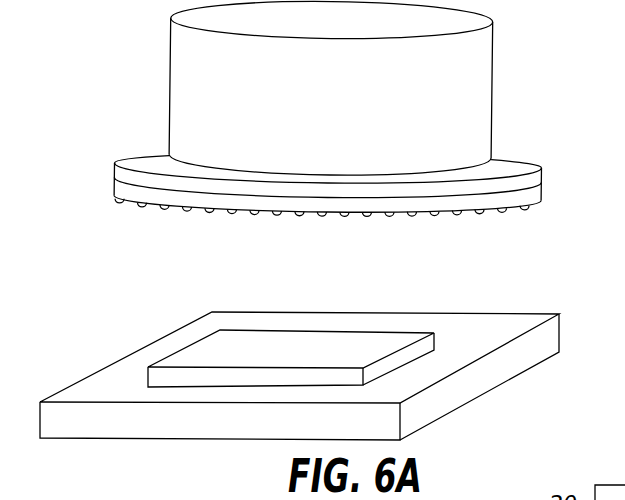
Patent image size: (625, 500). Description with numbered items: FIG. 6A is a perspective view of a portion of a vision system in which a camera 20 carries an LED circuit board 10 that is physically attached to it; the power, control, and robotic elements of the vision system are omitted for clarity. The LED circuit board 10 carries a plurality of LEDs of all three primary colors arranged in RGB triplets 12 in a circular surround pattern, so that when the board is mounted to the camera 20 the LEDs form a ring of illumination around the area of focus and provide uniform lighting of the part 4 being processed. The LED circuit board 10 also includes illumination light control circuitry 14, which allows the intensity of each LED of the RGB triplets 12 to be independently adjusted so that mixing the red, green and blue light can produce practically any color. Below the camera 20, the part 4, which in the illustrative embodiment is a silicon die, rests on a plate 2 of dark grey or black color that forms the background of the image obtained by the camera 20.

The LED circuit board 10 is at (305, 138).
The camera 20 is at (169, 92).
The illumination light control circuitry 14 is at (508, 167).
The RGB triplets 12 is at (167, 214).
The plate 2 is at (113, 380).
The part 4 is at (202, 355).